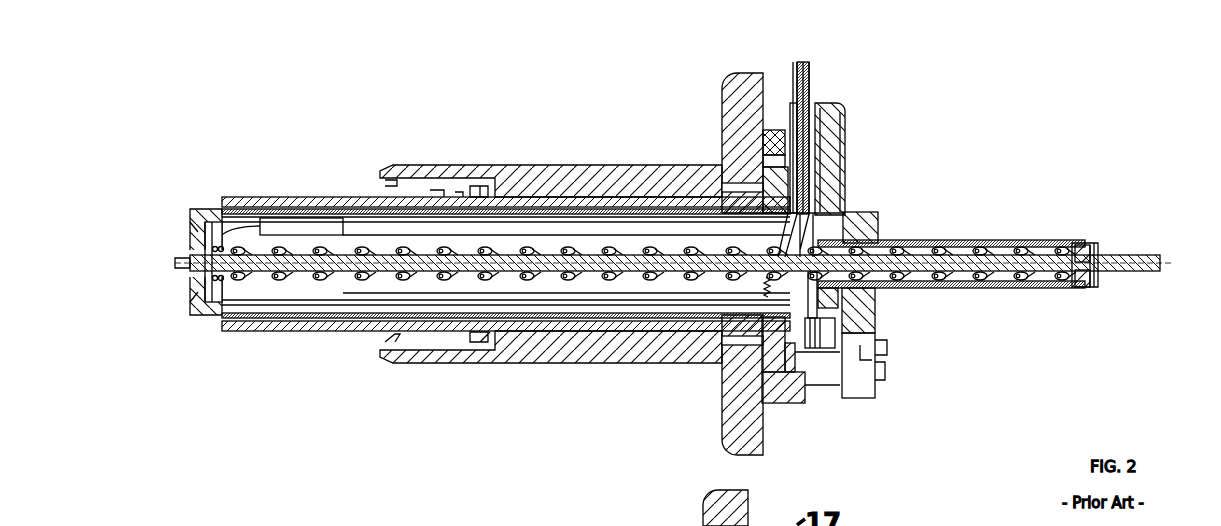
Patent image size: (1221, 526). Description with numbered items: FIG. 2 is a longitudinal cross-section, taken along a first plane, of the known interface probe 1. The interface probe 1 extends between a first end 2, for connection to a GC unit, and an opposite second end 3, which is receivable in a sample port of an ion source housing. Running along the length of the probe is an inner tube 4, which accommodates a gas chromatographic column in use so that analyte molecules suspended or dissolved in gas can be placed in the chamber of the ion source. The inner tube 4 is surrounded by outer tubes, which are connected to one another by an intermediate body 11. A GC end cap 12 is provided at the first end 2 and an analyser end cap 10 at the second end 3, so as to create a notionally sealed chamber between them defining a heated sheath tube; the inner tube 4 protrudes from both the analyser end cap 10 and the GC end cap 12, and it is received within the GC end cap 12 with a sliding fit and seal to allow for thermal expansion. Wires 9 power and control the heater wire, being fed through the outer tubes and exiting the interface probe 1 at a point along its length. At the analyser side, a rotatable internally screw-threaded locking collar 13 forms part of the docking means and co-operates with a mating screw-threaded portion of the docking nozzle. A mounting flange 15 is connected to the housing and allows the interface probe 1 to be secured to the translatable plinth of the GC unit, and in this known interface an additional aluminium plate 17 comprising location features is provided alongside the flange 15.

The interface probe 1 is at (649, 232).
The first end 2 is at (1008, 233).
The second end 3 is at (445, 251).
The inner tube 4 is at (990, 256).
The wires 9 is at (832, 46).
The analyser end cap 10 is at (200, 293).
The intermediate body 11 is at (868, 213).
The GC end cap 12 is at (1089, 246).
The locking collar 13 is at (513, 170).
The mounting flange 15 is at (724, 98).
The aluminium plate 17 is at (780, 128).